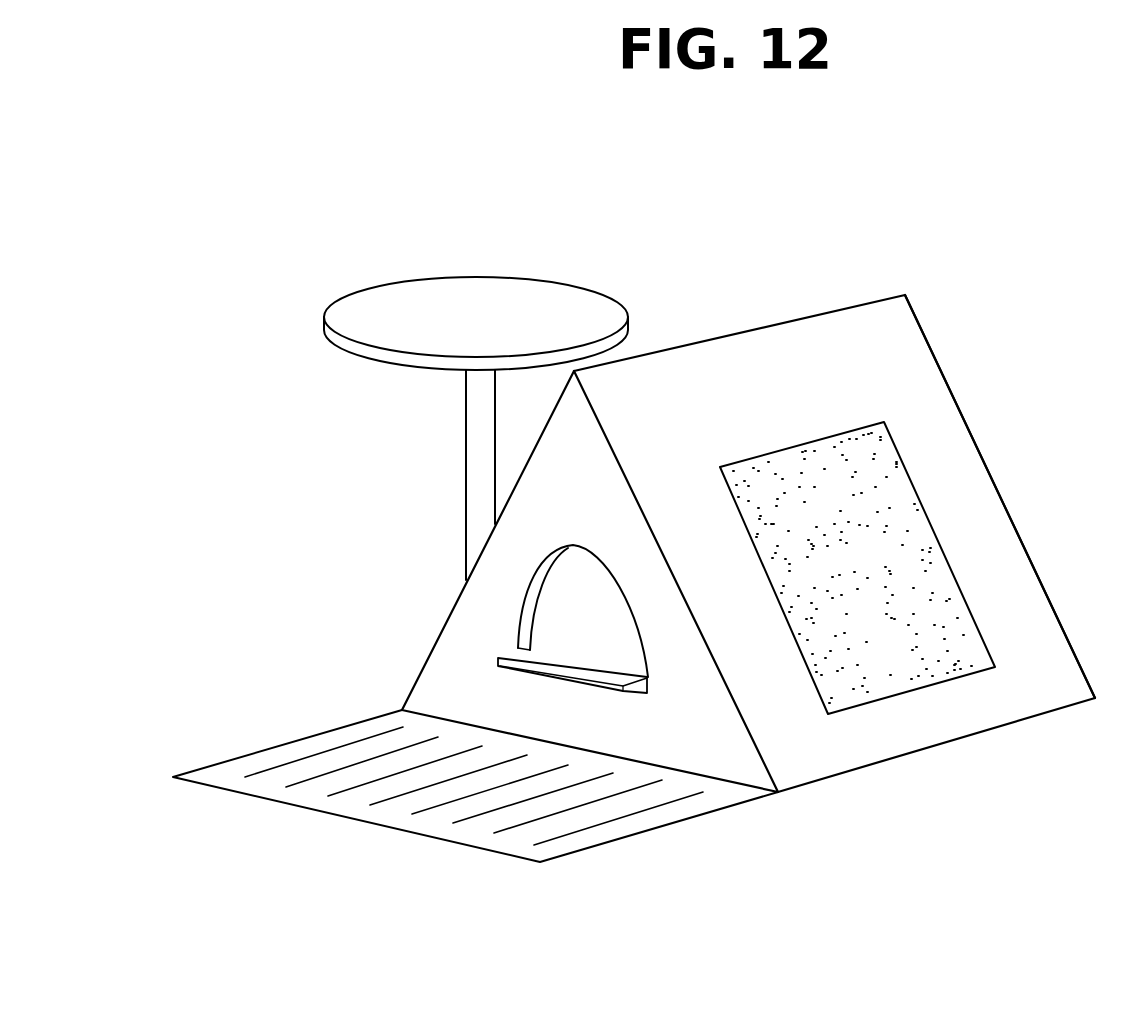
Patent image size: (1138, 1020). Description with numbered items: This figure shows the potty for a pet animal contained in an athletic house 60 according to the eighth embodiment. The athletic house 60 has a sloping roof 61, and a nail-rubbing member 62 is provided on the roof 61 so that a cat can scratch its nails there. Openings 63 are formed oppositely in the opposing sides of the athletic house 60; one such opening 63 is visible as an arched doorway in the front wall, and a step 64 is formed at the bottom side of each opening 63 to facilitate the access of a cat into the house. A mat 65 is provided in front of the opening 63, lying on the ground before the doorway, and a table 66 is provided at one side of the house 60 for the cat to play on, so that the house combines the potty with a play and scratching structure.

The athletic house 60 is at (953, 327).
The roof 61 is at (937, 395).
The nail-rubbing member 62 is at (907, 530).
The opening 63 is at (632, 627).
The step 64 is at (545, 660).
The mat 65 is at (312, 797).
The table 66 is at (490, 290).